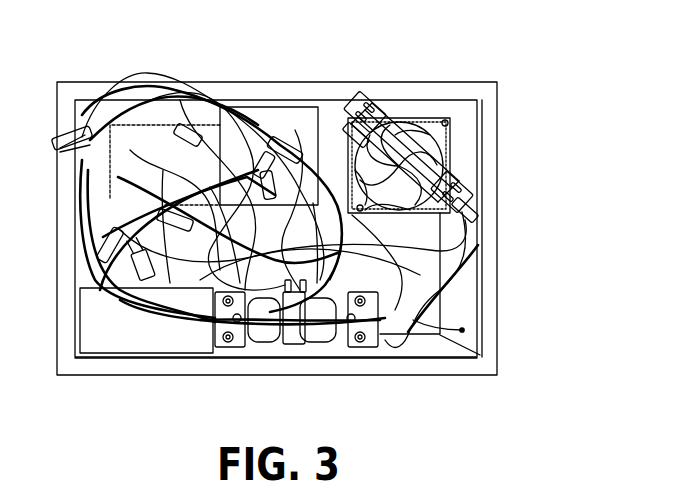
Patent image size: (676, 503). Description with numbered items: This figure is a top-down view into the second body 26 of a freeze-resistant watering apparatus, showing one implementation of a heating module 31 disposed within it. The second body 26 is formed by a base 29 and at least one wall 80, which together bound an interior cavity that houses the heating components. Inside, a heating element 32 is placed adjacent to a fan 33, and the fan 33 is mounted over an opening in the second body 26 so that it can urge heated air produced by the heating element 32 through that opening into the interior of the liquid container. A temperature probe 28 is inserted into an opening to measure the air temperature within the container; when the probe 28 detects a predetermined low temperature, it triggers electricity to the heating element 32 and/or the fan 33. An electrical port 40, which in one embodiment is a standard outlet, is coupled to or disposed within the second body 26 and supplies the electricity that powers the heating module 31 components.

The second body 26 is at (412, 82).
The temperature probe 28 is at (295, 117).
The base 29 is at (432, 332).
The heating module 31 is at (112, 350).
The heating element 32 is at (478, 197).
The fan 33 is at (437, 118).
The electrical port 40 is at (322, 342).
The wall 80 is at (337, 92).